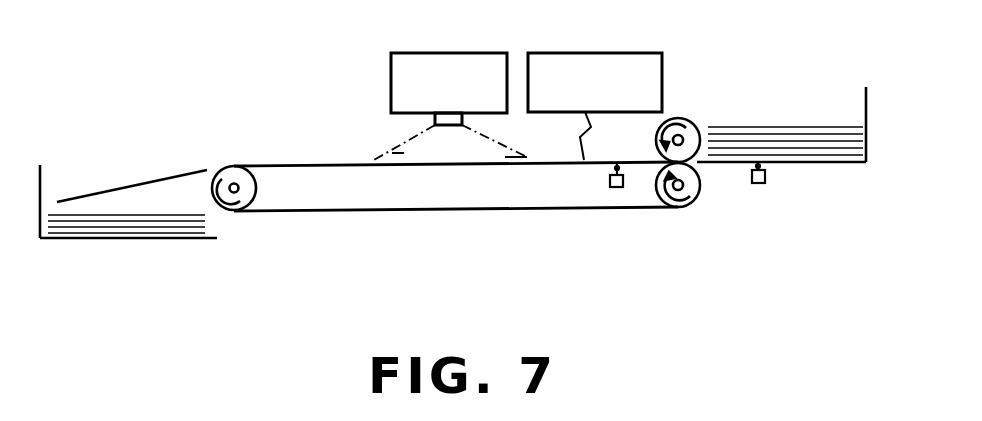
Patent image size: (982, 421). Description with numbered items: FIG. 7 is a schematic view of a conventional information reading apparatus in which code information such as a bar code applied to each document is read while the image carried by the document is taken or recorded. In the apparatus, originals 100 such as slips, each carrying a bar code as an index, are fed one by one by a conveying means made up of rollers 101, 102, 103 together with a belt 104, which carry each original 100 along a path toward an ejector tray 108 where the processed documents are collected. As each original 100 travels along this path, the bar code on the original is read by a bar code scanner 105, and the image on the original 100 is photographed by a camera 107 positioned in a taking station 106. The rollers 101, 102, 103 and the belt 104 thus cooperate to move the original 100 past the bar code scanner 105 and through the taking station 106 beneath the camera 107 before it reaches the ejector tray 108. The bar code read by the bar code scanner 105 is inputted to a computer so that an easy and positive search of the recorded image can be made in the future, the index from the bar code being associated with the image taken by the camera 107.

The original 100 is at (795, 127).
The roller 101 is at (685, 203).
The roller 102 is at (237, 209).
The roller 103 is at (686, 117).
The belt 104 is at (470, 212).
The bar code scanner 105 is at (607, 52).
The taking station 106 is at (404, 153).
The camera 107 is at (447, 53).
The ejector tray 108 is at (42, 173).